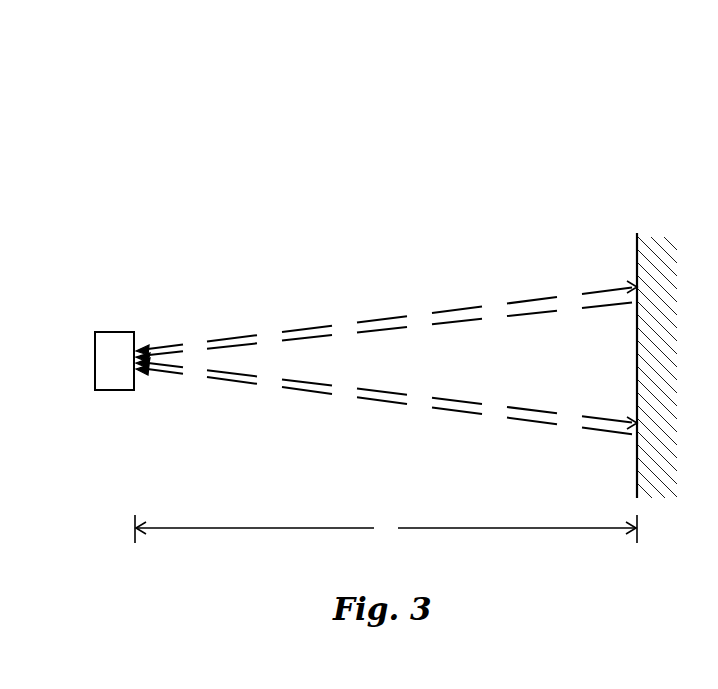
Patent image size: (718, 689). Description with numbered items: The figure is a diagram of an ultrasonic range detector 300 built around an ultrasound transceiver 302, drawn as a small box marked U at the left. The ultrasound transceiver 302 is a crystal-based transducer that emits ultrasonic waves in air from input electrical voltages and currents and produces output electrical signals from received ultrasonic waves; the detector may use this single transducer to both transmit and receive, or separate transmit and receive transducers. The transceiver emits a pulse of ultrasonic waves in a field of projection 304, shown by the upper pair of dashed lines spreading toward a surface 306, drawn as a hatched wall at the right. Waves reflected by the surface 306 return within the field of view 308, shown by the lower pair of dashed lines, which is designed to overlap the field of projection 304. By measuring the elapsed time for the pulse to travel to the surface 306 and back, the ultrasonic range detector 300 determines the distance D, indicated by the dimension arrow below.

The ultrasonic range detector 300 is at (401, 48).
The ultrasound transceiver 302 is at (115, 332).
The field of projection 304 is at (325, 288).
The surface 306 is at (637, 233).
The field of view 308 is at (290, 416).